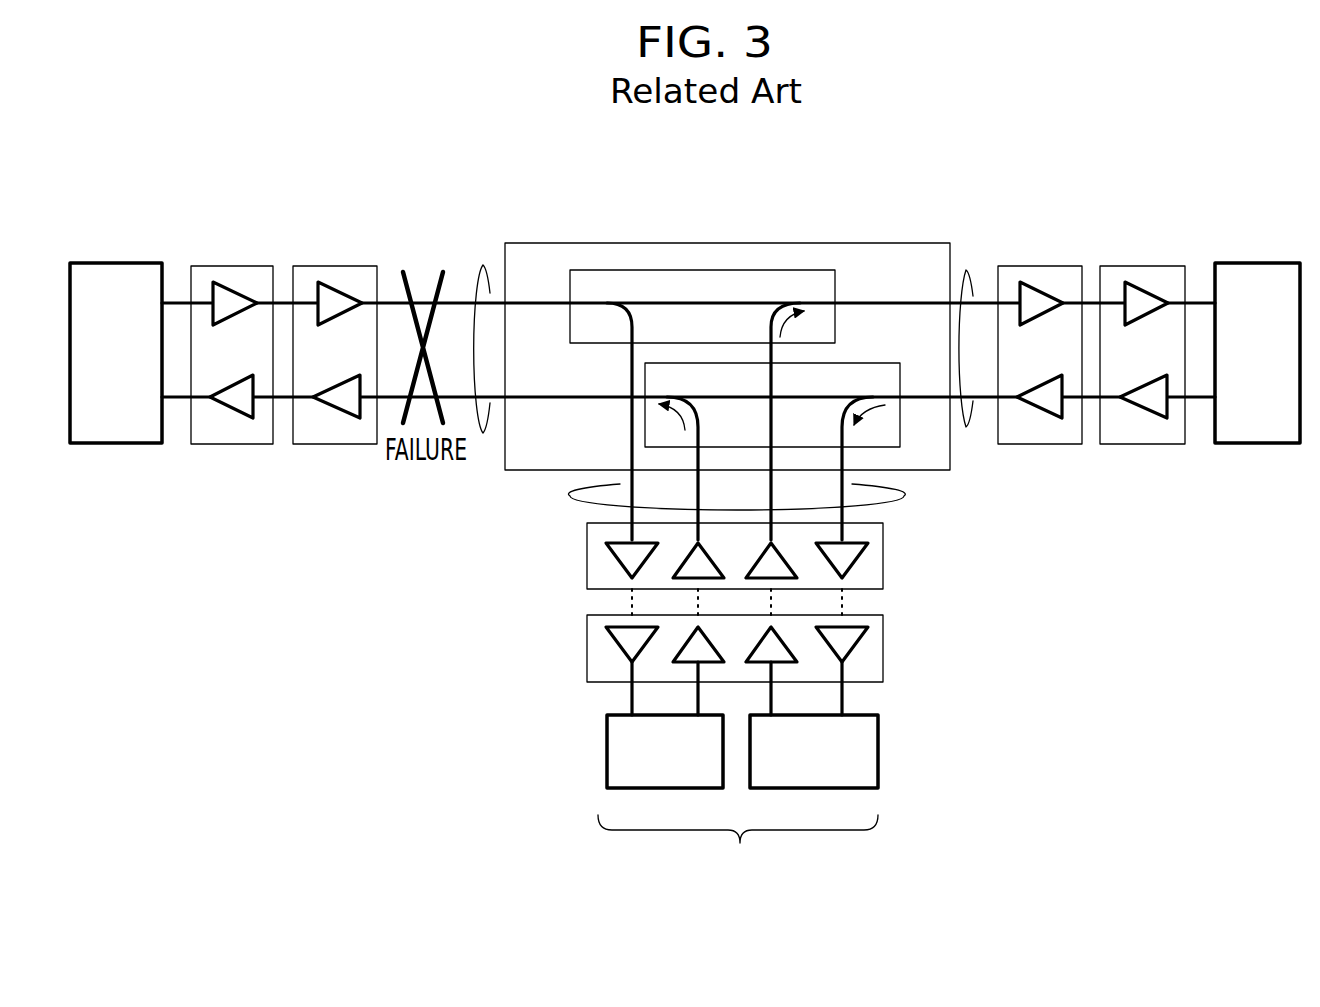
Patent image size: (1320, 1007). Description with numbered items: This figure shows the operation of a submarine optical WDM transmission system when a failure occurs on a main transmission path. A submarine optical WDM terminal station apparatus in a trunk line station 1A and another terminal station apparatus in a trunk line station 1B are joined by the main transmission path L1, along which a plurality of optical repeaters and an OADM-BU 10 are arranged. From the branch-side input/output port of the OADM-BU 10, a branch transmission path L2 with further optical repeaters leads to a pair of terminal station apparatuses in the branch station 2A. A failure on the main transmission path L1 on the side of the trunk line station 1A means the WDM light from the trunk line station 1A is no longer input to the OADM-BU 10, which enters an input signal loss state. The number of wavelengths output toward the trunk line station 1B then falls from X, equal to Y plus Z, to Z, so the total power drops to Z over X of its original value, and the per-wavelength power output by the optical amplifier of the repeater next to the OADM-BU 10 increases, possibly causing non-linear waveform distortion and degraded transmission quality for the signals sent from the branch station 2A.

The trunk line station 1A is at (116, 355).
The trunk line station 1B is at (1255, 355).
The branch station 2A is at (738, 801).
The OADM-BU 10 is at (568, 243).
The main transmission path L1 is at (476, 270).
The branch transmission path L2 is at (898, 493).